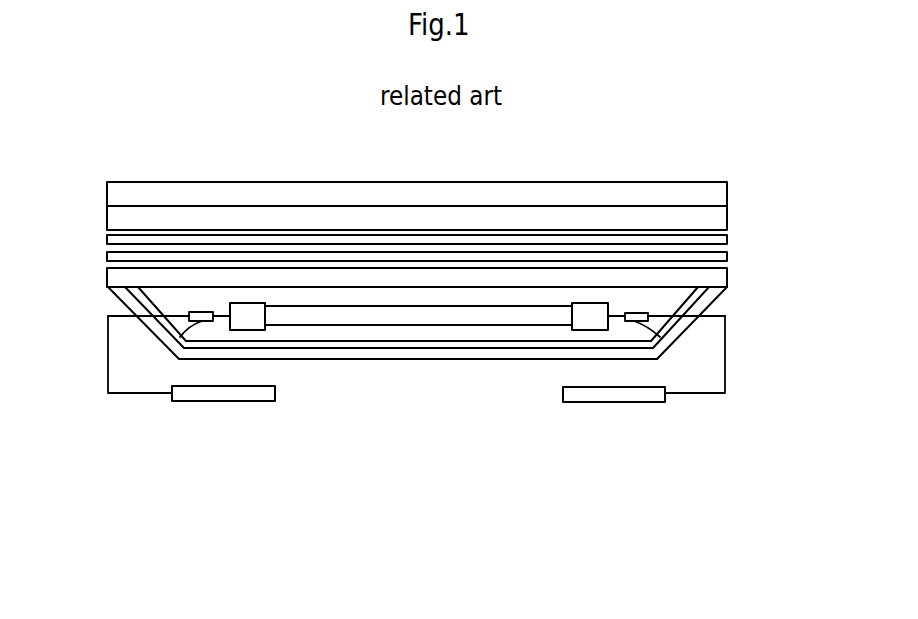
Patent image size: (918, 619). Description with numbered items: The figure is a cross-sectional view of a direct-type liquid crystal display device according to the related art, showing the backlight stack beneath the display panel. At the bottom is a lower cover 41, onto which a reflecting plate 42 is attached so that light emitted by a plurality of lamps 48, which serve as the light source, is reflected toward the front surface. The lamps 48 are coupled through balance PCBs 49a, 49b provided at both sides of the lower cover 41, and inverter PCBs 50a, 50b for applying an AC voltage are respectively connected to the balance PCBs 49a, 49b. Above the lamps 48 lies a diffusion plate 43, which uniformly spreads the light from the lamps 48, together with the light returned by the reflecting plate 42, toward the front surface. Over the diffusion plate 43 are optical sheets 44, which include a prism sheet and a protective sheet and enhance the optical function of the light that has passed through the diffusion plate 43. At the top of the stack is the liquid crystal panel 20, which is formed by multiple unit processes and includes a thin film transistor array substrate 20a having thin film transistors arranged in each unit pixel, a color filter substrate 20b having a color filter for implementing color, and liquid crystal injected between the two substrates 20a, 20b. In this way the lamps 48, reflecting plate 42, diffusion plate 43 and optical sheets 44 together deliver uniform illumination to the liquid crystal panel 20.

The liquid crystal panel 20 is at (467, 207).
The Thin Film Transistor (TFT) array substrate 20a is at (727, 220).
The color filter substrate 20b is at (727, 191).
The optical sheets 44 is at (740, 235).
The diffusion plate 43 is at (727, 278).
The lower cover 41 is at (495, 357).
The reflecting plate 42 is at (417, 343).
The lamps 48 is at (353, 323).
The balance PCB 49a is at (180, 336).
The balance PCB 49b is at (660, 336).
The inverter PCB 50a is at (230, 401).
The inverter PCB 50b is at (618, 402).